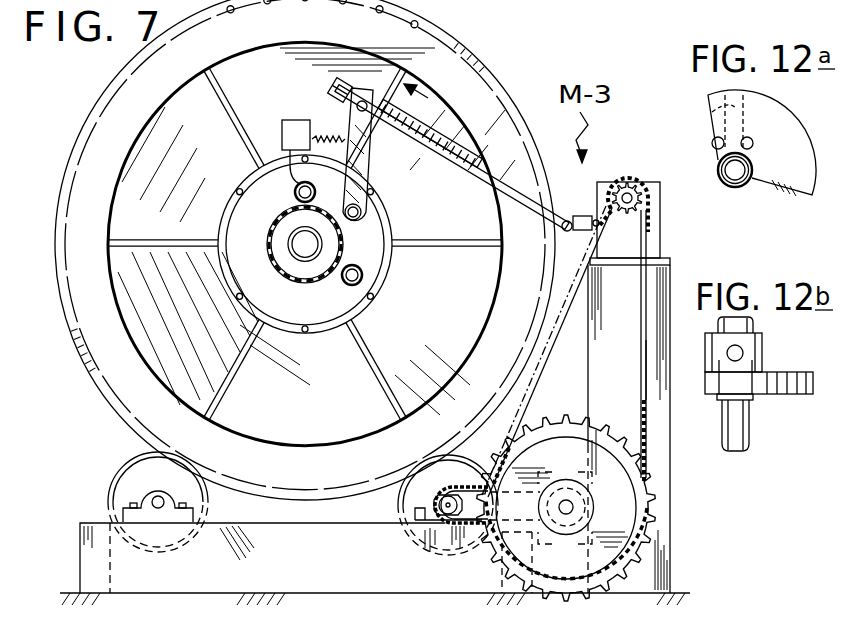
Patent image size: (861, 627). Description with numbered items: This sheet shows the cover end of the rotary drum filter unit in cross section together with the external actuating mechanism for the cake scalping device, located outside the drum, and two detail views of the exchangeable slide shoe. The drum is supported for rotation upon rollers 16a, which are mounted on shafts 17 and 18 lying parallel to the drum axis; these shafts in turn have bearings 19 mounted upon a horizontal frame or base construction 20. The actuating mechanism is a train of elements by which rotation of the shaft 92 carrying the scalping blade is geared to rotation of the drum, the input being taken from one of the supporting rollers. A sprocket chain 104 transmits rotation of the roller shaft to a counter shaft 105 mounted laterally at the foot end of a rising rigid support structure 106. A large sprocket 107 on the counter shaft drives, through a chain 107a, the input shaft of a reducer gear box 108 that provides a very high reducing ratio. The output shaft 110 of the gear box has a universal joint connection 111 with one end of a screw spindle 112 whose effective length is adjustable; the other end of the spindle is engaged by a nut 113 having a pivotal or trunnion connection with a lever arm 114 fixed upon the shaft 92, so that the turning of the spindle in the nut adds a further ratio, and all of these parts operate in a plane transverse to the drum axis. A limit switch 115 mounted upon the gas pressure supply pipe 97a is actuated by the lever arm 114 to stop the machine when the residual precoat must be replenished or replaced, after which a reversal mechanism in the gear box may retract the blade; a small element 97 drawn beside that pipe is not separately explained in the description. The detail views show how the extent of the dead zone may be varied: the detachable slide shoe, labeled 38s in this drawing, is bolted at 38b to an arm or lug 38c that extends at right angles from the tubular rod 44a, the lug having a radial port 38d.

In FIG. 7, the rollers 16a is at (114, 488).
In FIG. 7, the shaft 17 is at (151, 502).
In FIG. 7, the shaft 18 is at (450, 490).
In FIG. 7, the bearings 19 is at (438, 514).
In FIG. 7, the horizontal frame or base construction 20 is at (304, 565).
In FIG. 7, the shaft 92 is at (363, 213).
In FIG. 7, the pin 97 is at (363, 275).
In FIG. 7, the gas pressure supply pipe 97a is at (296, 188).
In FIG. 7, the sprocket chain 104 is at (566, 530).
In FIG. 7, the counter shaft 105 is at (573, 507).
In FIG. 7, the rising rigid support structure 106 is at (629, 409).
In FIG. 7, the large sprocket 107 is at (554, 440).
In FIG. 7, the chain 107a is at (641, 387).
In FIG. 7, the reducer gear box 108 is at (641, 182).
In FIG. 7, the output shaft 110 is at (579, 232).
In FIG. 7, the universal joint connection 111 is at (561, 231).
In FIG. 7, the screw spindle 112 is at (460, 176).
In FIG. 7, the nut 113 is at (374, 106).
In FIG. 7, the lever arm 114 is at (369, 170).
In FIG. 7, the limit switch 115 is at (300, 120).
In FIG. 12A, the bolt 38b is at (714, 146).
In FIG. 12B, the bolt 38b is at (716, 401).
In FIG. 12A, the arm or lug 38c is at (760, 117).
In FIG. 12B, the arm or lug 38c is at (706, 348).
In FIG. 12A, the radial port 38d is at (712, 112).
In FIG. 12B, the radial port 38d is at (744, 353).
In FIG. 12A, the cam surface 38s is at (800, 174).
In FIG. 12B, the cam surface 38s is at (787, 388).
In FIG. 12A, the tubular rod 44a is at (733, 188).
In FIG. 12B, the tubular rod 44a is at (754, 322).